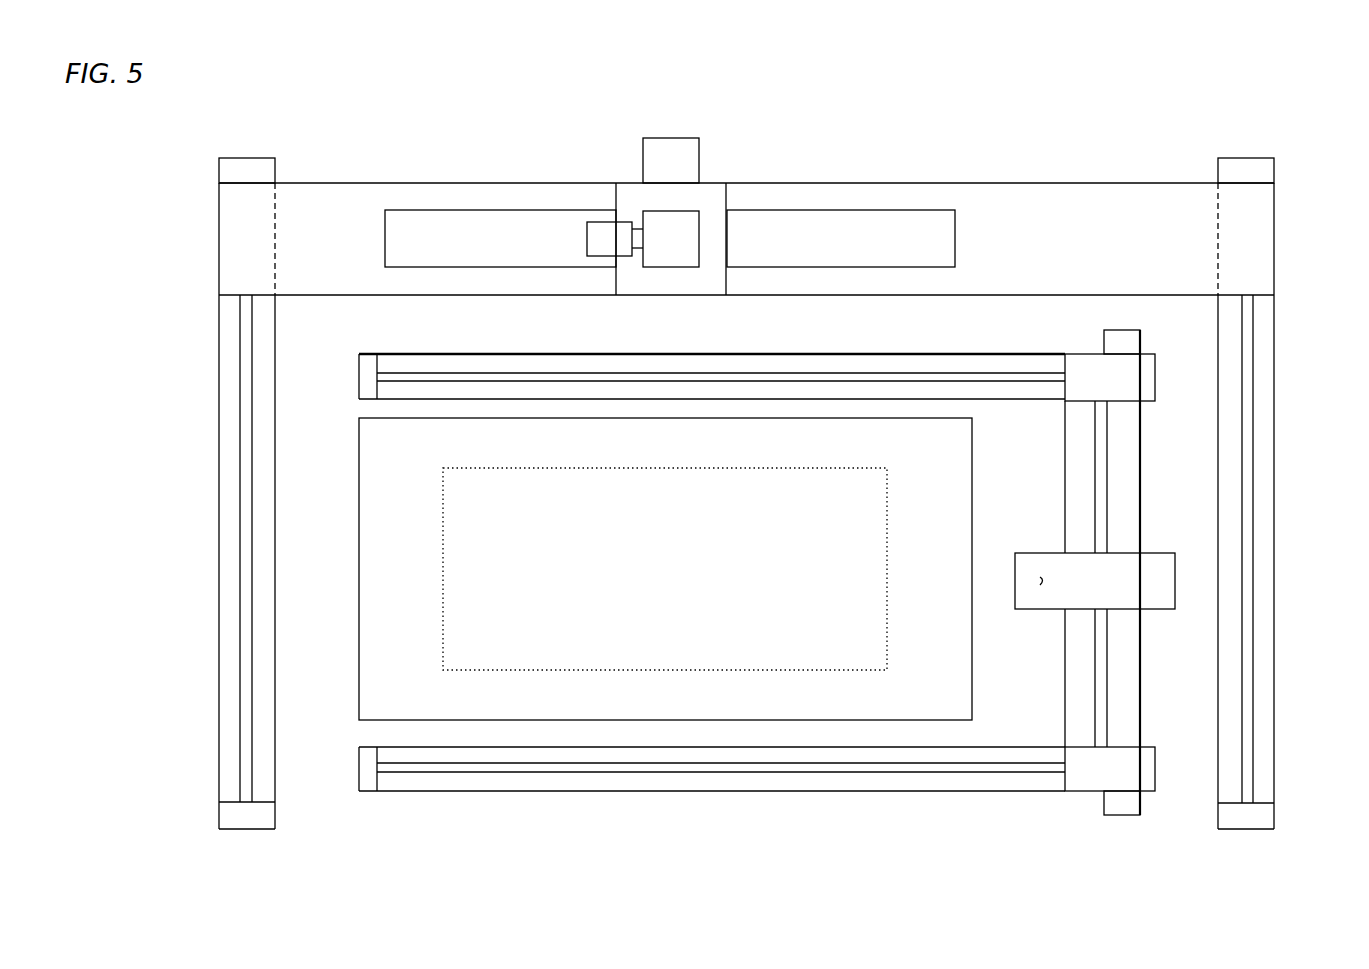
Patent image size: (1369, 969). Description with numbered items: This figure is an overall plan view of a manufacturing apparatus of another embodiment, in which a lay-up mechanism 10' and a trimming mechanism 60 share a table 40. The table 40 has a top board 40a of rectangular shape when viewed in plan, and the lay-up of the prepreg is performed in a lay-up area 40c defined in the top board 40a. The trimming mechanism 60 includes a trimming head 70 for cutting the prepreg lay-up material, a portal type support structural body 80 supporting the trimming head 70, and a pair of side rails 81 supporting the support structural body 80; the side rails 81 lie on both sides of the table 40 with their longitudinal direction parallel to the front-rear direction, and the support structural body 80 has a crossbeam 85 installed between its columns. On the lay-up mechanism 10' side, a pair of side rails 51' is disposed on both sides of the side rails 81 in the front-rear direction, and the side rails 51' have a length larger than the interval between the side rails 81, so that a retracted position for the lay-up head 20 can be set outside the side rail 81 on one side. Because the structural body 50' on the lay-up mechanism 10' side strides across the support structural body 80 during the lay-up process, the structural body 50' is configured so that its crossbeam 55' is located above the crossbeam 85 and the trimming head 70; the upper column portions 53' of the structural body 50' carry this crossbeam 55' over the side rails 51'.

The lay-up mechanism 10' is at (746, 138).
The structural body 50' is at (746, 200).
The column upper portion 53' is at (748, 226).
The side rail 51' is at (748, 562).
The crossbeam 55' is at (670, 197).
The lay-up head 20 is at (713, 170).
The table 40 is at (972, 662).
The top board 40a is at (943, 545).
The lay-up area 40c is at (888, 497).
The side rail 81 is at (797, 367).
The trimming mechanism 60 is at (1088, 817).
The crossbeam 85 is at (1123, 498).
The trimming head 70 is at (1033, 612).
The support structural body 80 is at (1172, 827).